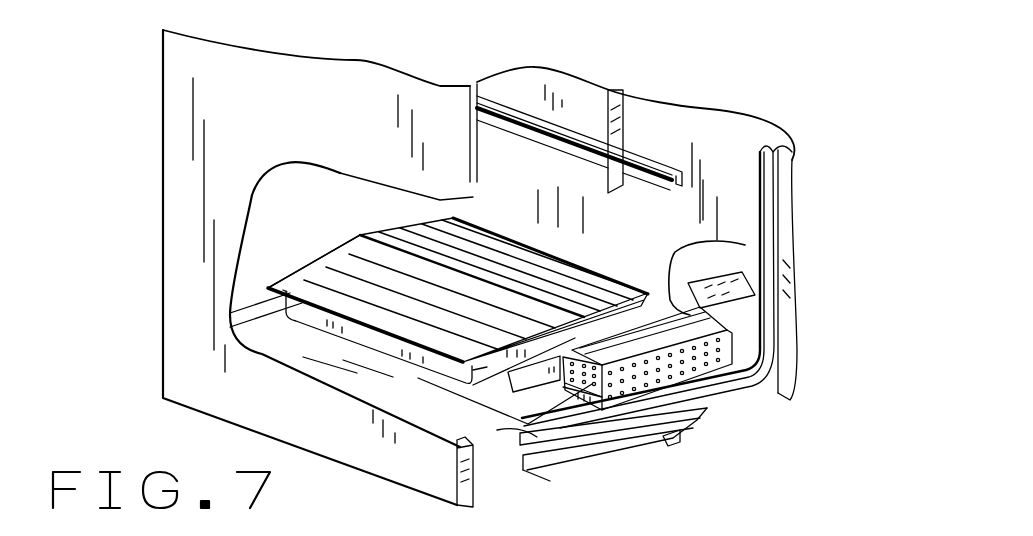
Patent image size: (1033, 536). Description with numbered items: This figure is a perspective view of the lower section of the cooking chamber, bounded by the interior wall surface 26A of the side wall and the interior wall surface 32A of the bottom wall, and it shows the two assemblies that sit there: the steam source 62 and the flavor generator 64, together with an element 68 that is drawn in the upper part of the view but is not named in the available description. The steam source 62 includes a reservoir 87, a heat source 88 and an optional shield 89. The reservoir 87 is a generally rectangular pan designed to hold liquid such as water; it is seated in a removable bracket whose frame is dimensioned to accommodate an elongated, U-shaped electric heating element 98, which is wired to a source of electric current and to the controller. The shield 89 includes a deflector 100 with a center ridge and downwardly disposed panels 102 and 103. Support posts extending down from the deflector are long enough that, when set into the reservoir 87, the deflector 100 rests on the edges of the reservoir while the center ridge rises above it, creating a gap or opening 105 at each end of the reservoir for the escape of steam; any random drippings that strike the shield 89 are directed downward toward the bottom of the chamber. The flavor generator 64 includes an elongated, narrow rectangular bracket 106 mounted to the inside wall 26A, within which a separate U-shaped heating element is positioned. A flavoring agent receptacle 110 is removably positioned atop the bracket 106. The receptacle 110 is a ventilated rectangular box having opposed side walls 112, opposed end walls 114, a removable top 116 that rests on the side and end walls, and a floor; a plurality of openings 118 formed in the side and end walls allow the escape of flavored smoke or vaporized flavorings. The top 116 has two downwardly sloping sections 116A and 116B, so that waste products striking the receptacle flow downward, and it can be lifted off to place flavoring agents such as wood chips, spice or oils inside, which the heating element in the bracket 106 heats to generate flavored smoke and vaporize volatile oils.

The interior wall surface of side wall 26A is at (742, 158).
The interior wall surface of bottom wall 32A is at (537, 437).
The steam source 62 is at (557, 262).
The flavor generator 64 is at (735, 315).
The post 68 is at (626, 103).
The reservoir 87 is at (483, 370).
The heat source 88 is at (545, 377).
The shield 89 is at (477, 258).
The U-shaped electric heating element 98 is at (258, 306).
The deflector 100 is at (380, 238).
The downwardly disposed panel 102 is at (320, 270).
The downwardly disposed panel 103 is at (422, 245).
The gap or opening 105 is at (550, 313).
The bracket 106 is at (710, 367).
The flavoring agent receptacle 110 is at (722, 358).
The side wall 112 is at (655, 380).
The end wall 114 is at (580, 378).
The removable top 116 is at (727, 330).
The downwardly sloping section 116A is at (715, 248).
The downwardly sloping section 116B is at (727, 258).
The openings 118 is at (667, 355).